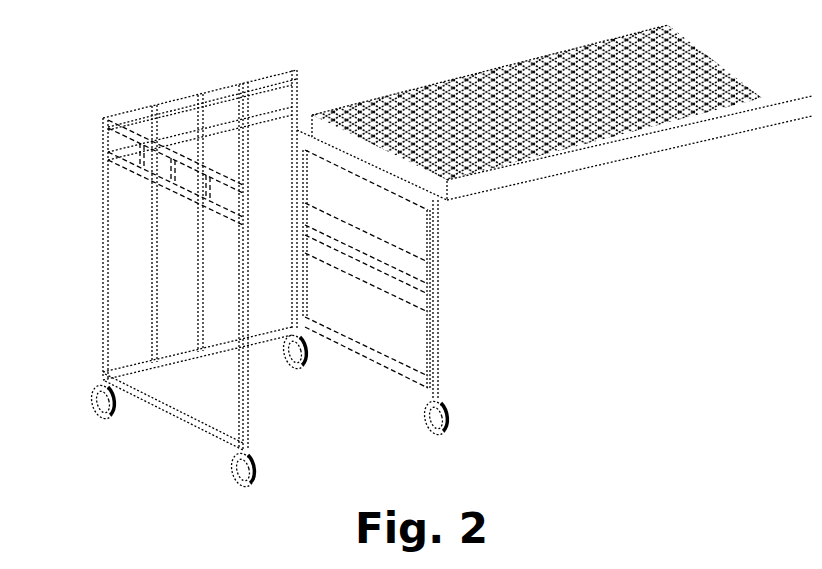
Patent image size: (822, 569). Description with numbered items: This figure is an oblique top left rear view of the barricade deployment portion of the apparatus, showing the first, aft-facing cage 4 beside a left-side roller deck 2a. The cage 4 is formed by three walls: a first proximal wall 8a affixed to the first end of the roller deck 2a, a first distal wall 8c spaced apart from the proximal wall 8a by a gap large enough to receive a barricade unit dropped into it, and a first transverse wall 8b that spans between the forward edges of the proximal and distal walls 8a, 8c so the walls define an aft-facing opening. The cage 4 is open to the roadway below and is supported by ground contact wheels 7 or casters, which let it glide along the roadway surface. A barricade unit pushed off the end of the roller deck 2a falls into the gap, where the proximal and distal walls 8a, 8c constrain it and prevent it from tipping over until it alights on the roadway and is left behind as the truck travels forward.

The first, aft-facing cage 4 is at (90, 47).
The left-side roller deck 2a is at (577, 174).
The ground contact wheels 7 is at (90, 392).
The first proximal wall 8a is at (437, 280).
The first transverse wall 8b is at (297, 76).
The first distal wall 8c is at (102, 193).